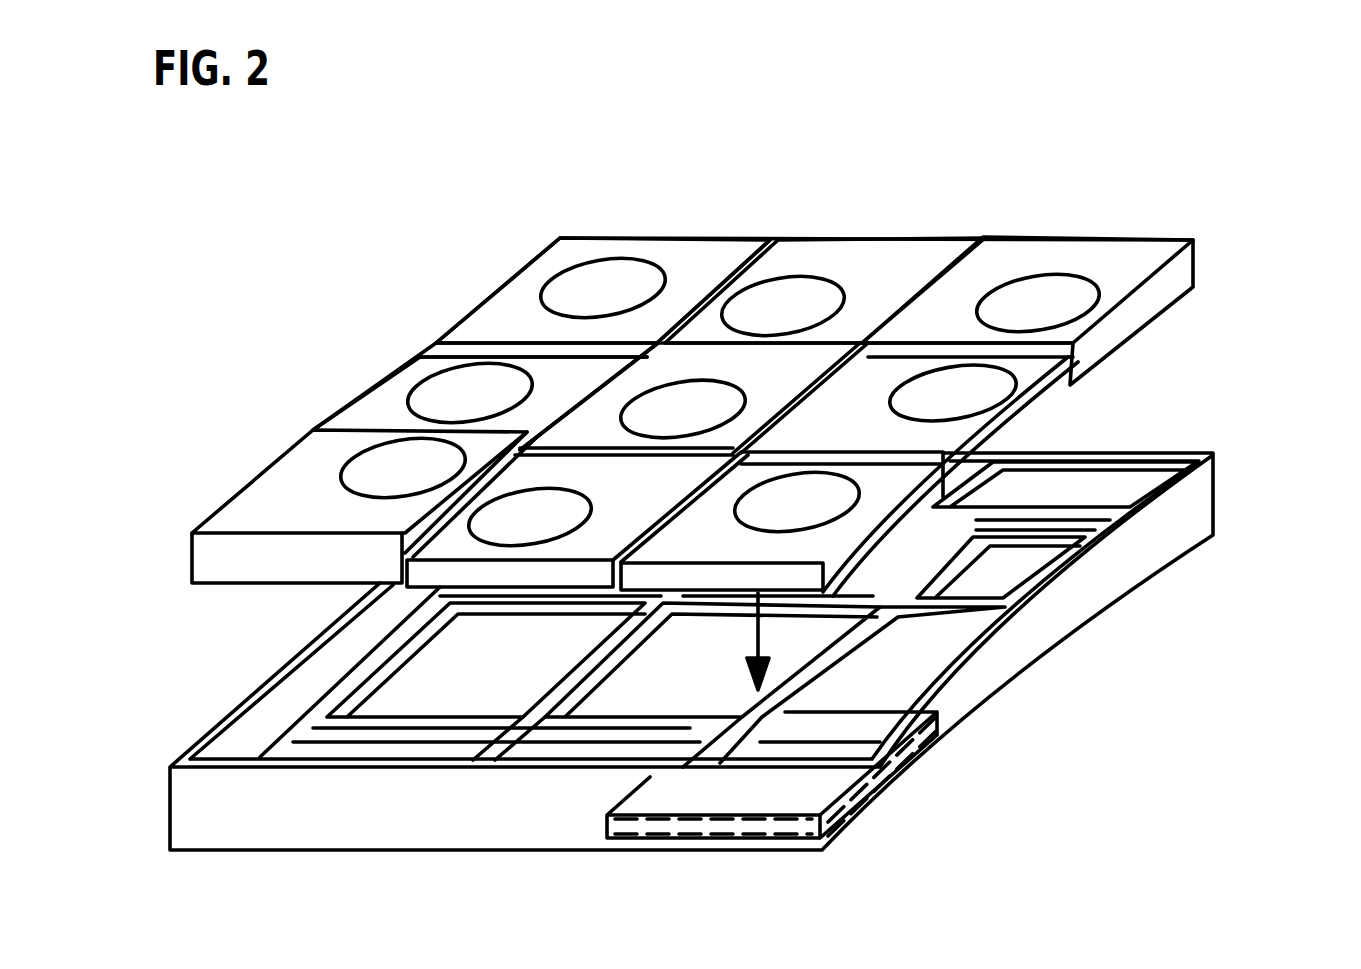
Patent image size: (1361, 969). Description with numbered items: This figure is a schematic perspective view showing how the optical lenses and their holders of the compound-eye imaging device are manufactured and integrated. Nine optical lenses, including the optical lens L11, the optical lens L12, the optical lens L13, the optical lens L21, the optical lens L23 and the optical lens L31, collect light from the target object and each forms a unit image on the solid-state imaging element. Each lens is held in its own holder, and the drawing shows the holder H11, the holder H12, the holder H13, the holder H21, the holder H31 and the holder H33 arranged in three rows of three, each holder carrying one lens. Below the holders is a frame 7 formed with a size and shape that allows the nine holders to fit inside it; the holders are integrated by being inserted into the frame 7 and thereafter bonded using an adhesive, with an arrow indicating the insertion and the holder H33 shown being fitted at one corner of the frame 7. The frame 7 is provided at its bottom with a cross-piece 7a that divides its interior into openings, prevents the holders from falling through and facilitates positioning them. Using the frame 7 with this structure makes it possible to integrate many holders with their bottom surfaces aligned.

The optical lens L11 is at (603, 283).
The holder H11 is at (697, 263).
The optical lens L12 is at (800, 297).
The holder H12 is at (891, 272).
The optical lens L13 is at (1037, 307).
The holder H13 is at (1124, 265).
The holder H21 is at (543, 373).
The optical lens L21 is at (440, 403).
The optical lens L23 is at (973, 395).
The holder H31 is at (327, 455).
The optical lens L31 is at (340, 472).
The holder H33 is at (943, 727).
The frame 7 is at (1193, 500).
The cross-piece 7a is at (990, 578).